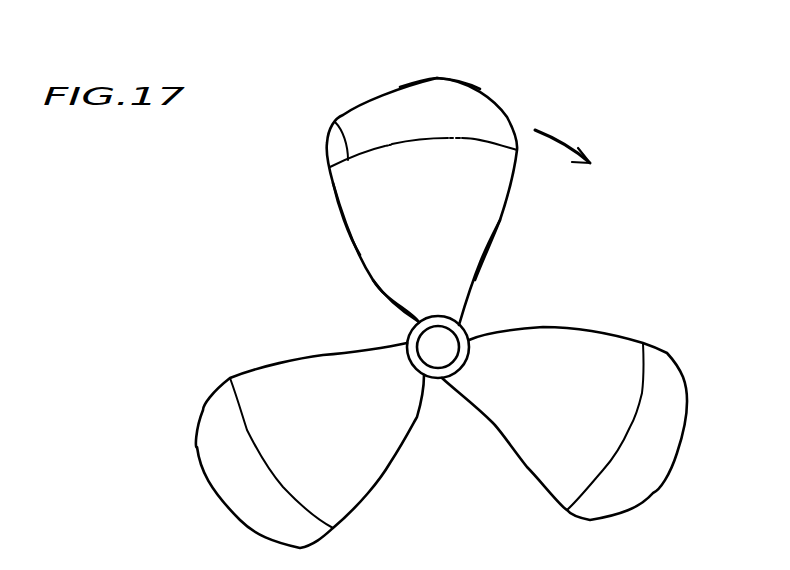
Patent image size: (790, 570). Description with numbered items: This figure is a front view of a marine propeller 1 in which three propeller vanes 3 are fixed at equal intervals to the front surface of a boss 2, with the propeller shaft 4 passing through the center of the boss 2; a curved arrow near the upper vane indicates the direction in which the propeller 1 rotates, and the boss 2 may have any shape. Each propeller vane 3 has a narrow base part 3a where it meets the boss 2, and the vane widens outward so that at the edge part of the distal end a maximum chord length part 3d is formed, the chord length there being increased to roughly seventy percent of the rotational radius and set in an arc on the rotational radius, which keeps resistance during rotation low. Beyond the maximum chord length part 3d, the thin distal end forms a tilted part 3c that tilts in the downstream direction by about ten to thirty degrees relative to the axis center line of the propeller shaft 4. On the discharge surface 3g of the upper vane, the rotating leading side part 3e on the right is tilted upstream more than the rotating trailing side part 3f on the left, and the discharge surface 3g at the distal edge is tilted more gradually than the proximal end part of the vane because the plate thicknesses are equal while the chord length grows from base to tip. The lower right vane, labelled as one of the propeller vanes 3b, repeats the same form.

The propeller 1 is at (441, 291).
The boss 2 is at (466, 362).
The propeller vane 3 is at (391, 188).
The base part 3a is at (403, 317).
The blade 3b is at (557, 507).
The tilted part 3c is at (472, 85).
The maximum chord length part 3d is at (335, 122).
The rotating leading side part 3e is at (482, 255).
The rotating trailing side part 3f is at (350, 237).
The discharge surface 3g is at (441, 227).
The propeller shaft 4 is at (433, 368).